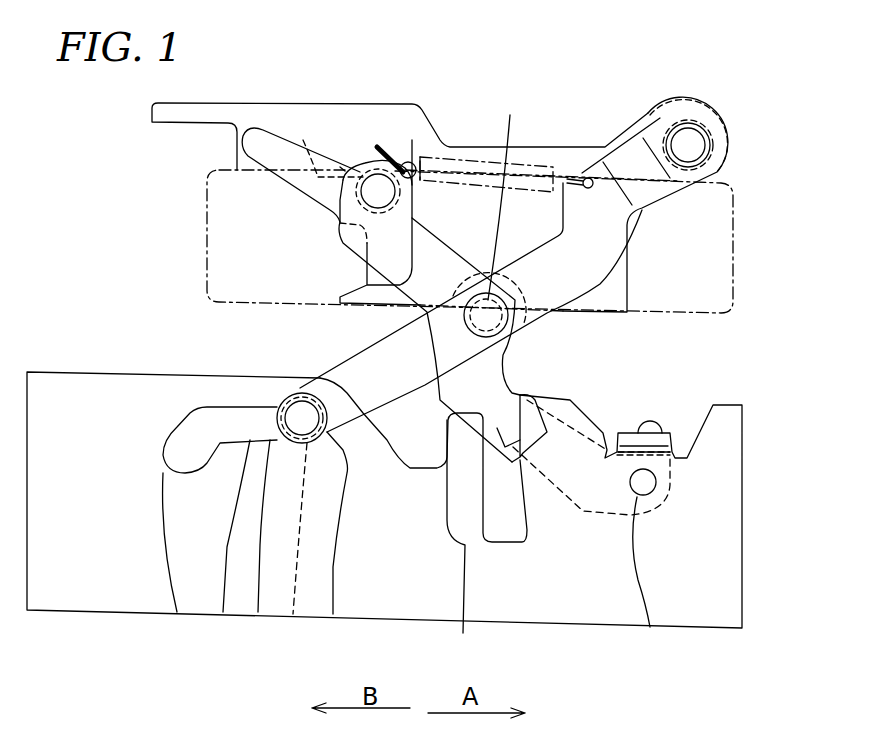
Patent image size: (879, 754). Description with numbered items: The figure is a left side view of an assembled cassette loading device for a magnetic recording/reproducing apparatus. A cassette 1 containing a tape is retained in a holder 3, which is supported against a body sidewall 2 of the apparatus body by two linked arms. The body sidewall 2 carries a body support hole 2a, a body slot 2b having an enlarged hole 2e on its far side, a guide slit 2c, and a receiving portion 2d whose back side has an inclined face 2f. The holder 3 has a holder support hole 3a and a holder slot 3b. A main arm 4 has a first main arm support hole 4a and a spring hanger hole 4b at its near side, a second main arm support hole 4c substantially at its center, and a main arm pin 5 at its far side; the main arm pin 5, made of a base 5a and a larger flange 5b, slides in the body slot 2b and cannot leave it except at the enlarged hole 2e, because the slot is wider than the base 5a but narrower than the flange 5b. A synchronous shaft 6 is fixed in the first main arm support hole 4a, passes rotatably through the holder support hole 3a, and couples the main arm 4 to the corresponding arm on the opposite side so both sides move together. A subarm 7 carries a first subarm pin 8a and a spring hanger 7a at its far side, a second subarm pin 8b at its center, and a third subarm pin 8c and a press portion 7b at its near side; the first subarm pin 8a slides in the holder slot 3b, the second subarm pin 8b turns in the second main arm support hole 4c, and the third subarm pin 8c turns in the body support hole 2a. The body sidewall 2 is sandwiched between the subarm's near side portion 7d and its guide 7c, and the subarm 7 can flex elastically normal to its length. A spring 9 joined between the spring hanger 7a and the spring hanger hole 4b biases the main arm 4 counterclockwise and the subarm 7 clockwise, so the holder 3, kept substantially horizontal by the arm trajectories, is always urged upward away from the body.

The cassette 1 is at (220, 262).
The body sidewall 2 is at (125, 580).
The body support hole 2a is at (650, 627).
The body slot 2b is at (223, 612).
The guide slit 2c is at (463, 633).
The receiving portion 2d is at (630, 433).
The enlarged hole 2e is at (177, 612).
The inclined face 2f is at (657, 443).
The holder 3 is at (365, 113).
The holder support hole 3a is at (712, 124).
The holder slot 3b is at (340, 167).
The main arm 4 is at (350, 365).
The first main arm support hole 4a is at (665, 127).
The spring hanger hole 4b is at (584, 180).
The second main arm support hole 4c is at (512, 320).
The main arm pin 5 is at (258, 612).
The base 5a is at (293, 614).
The flange 5b is at (333, 614).
The synchronous shaft 6 is at (690, 147).
The subarm 7 is at (390, 240).
The spring hanger 7a is at (395, 148).
The press portion 7b is at (652, 424).
The guide 7c is at (566, 402).
The near side portion 7d is at (505, 428).
The first subarm pin 8a is at (303, 140).
The second subarm pin 8b is at (511, 195).
The third subarm pin 8c is at (653, 480).
The spring 9 is at (488, 160).